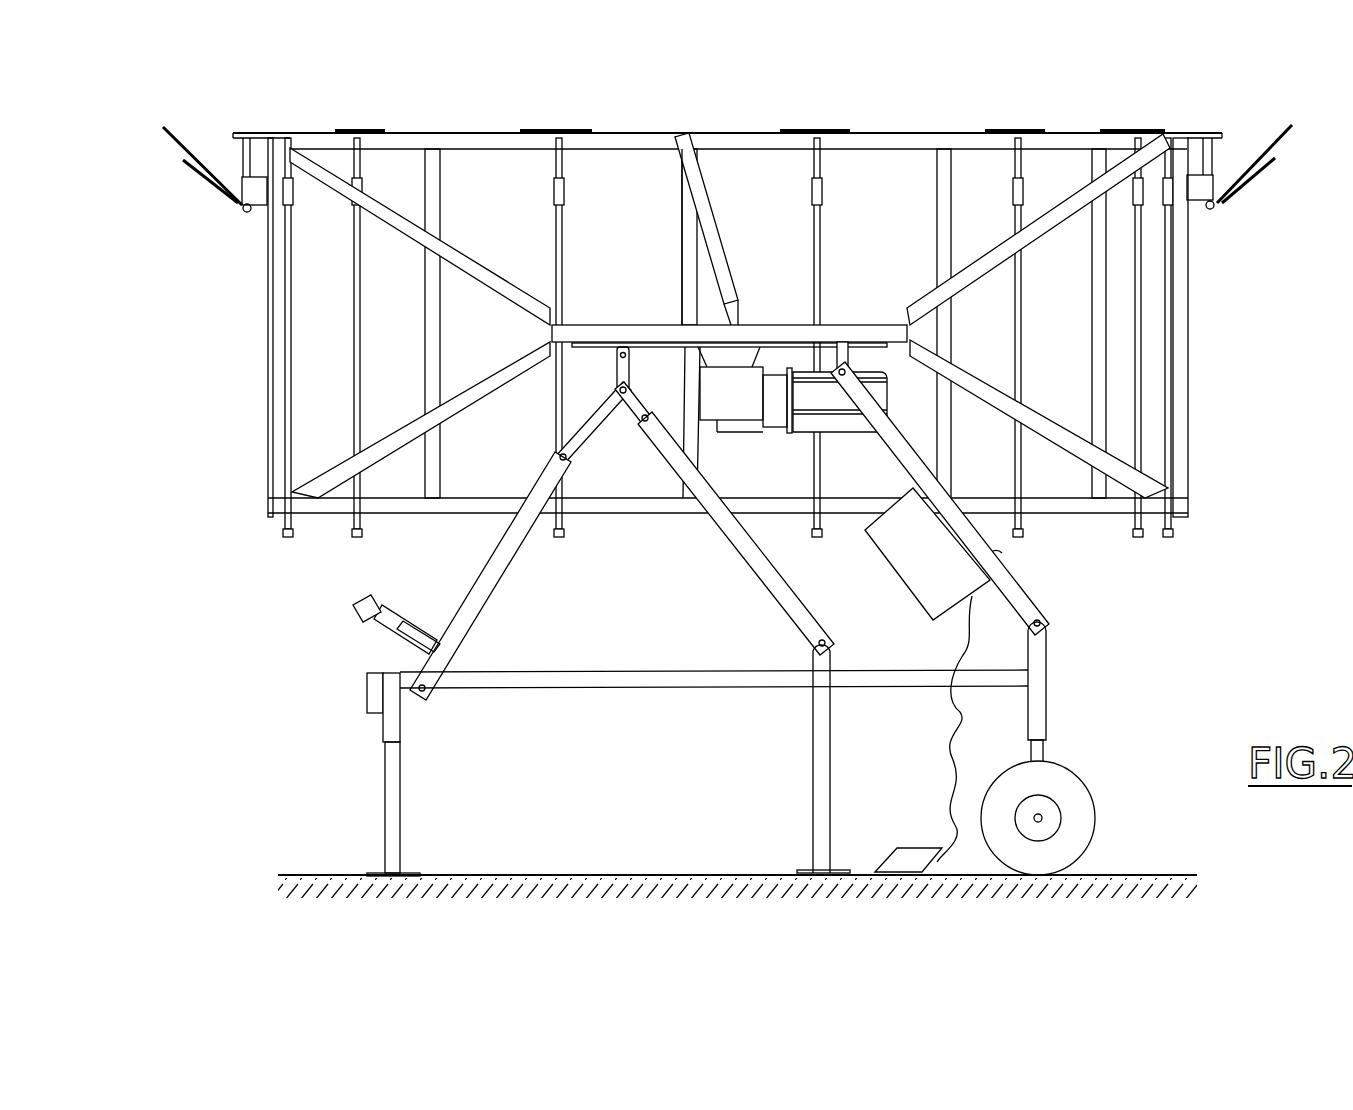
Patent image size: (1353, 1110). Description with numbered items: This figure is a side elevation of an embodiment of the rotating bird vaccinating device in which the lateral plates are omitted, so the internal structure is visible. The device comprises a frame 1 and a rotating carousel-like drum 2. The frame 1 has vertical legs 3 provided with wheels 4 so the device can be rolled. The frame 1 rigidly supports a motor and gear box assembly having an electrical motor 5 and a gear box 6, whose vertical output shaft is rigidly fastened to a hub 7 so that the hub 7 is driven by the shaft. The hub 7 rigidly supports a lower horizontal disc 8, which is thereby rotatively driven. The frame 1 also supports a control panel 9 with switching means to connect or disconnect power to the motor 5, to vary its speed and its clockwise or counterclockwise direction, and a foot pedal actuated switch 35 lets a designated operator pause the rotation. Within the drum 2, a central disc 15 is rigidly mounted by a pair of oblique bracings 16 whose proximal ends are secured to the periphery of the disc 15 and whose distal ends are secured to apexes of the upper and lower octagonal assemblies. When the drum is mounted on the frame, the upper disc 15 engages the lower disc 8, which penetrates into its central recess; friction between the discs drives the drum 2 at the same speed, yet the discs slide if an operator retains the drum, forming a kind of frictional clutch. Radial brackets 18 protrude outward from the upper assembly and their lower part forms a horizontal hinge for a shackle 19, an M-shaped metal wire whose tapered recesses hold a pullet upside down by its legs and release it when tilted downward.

The frame 1 is at (624, 722).
The drum 2 is at (244, 322).
The vertical legs 3 is at (385, 812).
The wheels 4 is at (1068, 782).
The electrical motor 5 is at (845, 425).
The gear box 6 is at (368, 133).
The hub 7 is at (745, 358).
The lower horizontal disc 8 is at (578, 348).
The control panel 9 is at (913, 592).
The central disc 15 is at (840, 330).
The oblique bracings 16 is at (408, 428).
The radial brackets 18 is at (1200, 133).
The shackle 19 is at (1270, 142).
The foot pedal actuated switch 35 is at (937, 862).